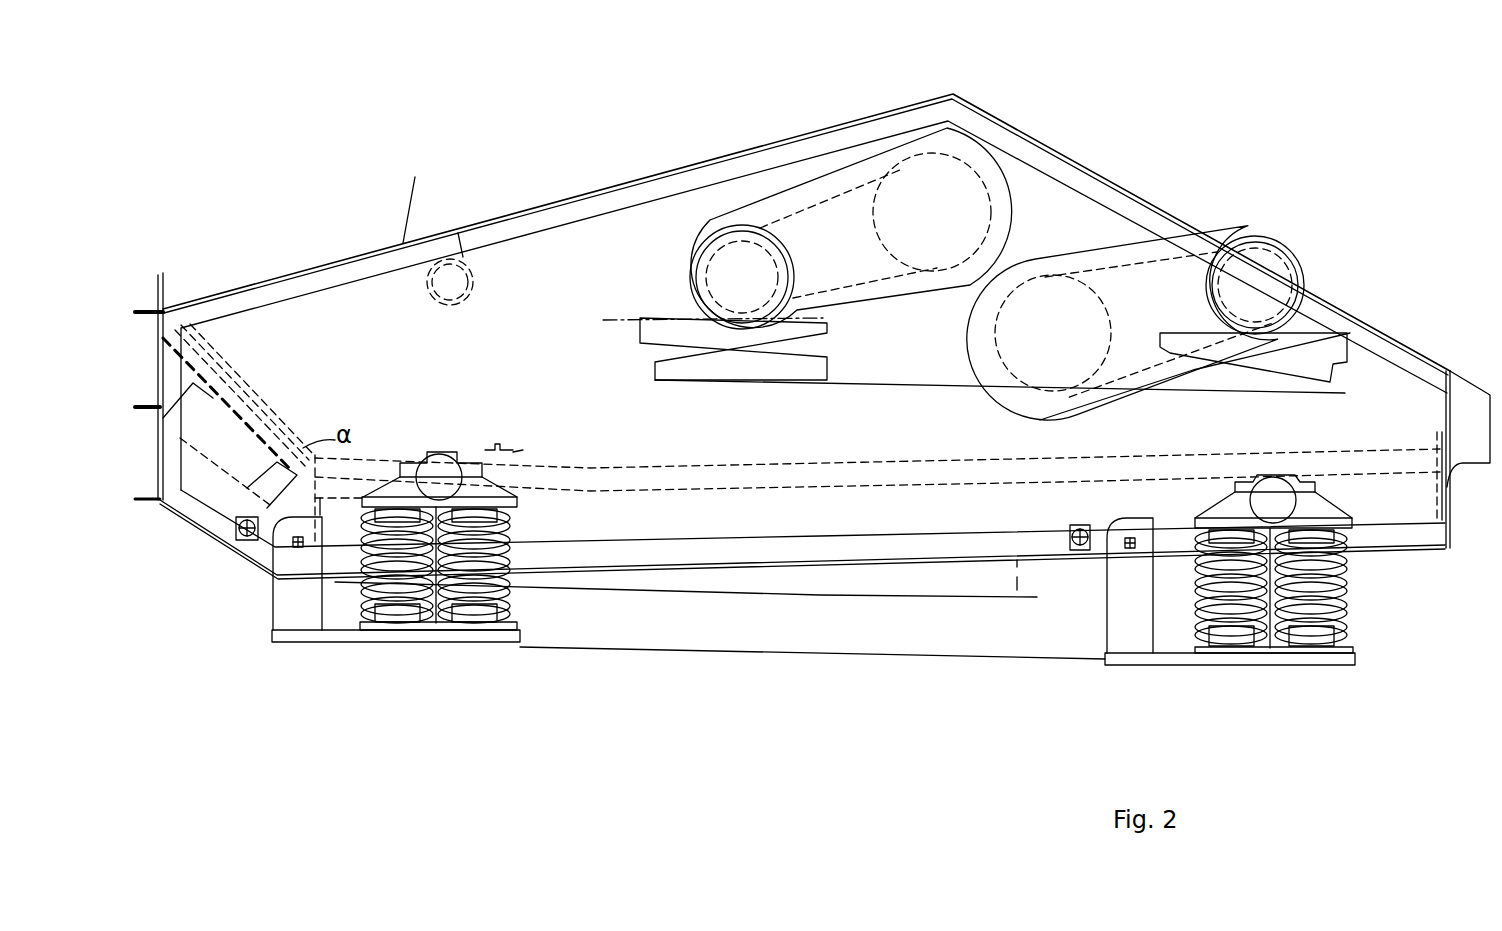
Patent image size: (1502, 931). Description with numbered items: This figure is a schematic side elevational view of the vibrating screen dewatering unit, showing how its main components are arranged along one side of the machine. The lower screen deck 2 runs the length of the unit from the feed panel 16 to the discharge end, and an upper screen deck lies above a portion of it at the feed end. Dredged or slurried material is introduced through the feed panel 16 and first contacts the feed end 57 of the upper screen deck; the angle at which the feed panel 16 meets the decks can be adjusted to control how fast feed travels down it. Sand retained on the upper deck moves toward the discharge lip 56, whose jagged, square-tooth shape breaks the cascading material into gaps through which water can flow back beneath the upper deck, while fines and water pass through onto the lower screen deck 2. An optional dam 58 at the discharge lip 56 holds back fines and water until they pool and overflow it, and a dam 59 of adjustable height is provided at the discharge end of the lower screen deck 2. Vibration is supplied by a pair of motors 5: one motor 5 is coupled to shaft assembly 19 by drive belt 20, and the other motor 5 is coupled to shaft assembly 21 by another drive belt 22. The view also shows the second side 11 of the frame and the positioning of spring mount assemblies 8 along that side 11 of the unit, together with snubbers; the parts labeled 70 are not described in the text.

The lower screen deck 2 is at (385, 473).
The motor 5 is at (997, 279).
The spring mount assembly 8 is at (530, 523).
The second side 11 is at (709, 301).
The feed panel 16 is at (243, 383).
The shaft assembly 19 is at (1007, 102).
The drive belt 20 is at (812, 207).
The shaft assembly 21 is at (967, 388).
The drive belt 22 is at (1123, 270).
The discharge lip 56 is at (512, 440).
The feed end 57 is at (363, 413).
The dam 58 is at (497, 440).
The dam 59 is at (1439, 432).
The base support 70 is at (237, 542).